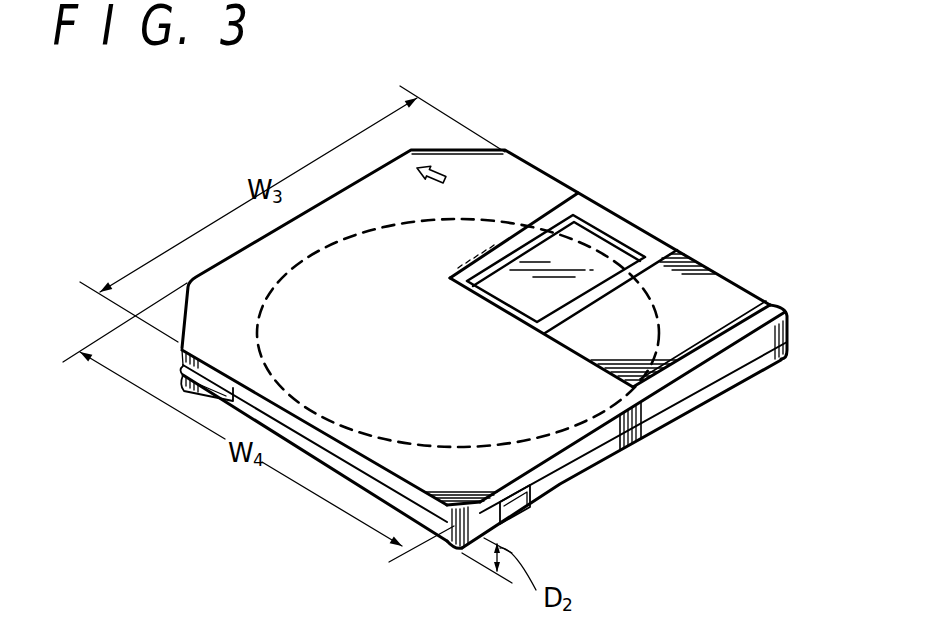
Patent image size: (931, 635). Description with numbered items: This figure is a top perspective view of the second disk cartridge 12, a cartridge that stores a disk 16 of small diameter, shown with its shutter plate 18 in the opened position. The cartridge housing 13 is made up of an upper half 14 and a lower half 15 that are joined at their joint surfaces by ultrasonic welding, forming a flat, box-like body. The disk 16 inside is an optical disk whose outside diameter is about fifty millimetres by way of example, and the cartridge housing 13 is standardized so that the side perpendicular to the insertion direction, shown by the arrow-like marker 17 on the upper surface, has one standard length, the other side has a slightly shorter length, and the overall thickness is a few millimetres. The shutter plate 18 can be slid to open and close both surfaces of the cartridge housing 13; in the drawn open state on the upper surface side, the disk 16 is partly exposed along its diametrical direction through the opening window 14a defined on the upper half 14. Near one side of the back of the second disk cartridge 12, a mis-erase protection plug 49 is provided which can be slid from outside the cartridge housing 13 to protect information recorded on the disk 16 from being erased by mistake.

The second disk cartridge 12 is at (655, 449).
The cartridge housing 13 is at (817, 397).
The upper half 14 is at (743, 360).
The opening window 14a is at (607, 267).
The lower half 15 is at (727, 383).
The disk 16 is at (640, 238).
The arrow-like marker 17 is at (445, 178).
The shutter plate 18 is at (715, 293).
The mis-erase protection plug 49 is at (521, 510).